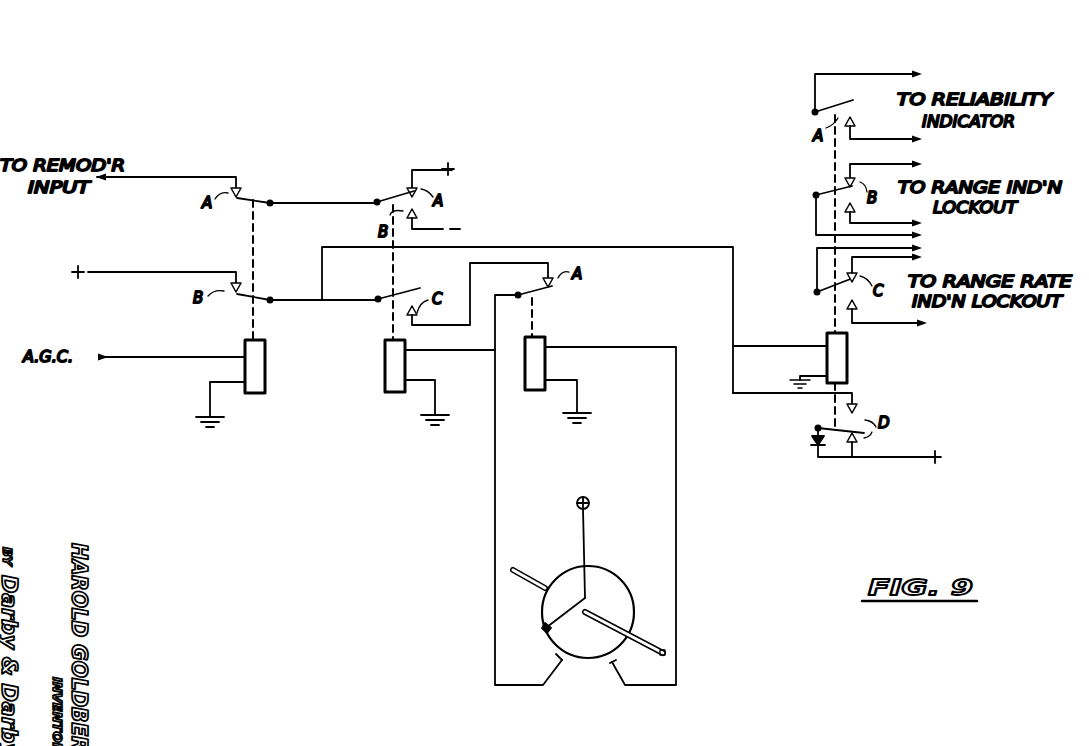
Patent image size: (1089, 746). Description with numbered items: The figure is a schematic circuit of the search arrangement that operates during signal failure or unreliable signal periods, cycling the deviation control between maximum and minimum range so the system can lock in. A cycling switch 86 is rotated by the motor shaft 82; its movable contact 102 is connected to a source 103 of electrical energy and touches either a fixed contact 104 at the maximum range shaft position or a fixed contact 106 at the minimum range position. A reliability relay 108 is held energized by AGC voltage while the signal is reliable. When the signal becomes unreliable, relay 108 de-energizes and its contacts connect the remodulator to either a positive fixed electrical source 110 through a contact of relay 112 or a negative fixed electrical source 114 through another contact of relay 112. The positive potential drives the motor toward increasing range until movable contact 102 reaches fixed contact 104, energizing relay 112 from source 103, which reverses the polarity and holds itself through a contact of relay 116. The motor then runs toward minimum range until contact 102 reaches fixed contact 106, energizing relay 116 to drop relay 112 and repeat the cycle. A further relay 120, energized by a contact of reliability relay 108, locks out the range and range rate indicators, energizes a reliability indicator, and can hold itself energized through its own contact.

The motor shaft 82 is at (663, 650).
The cycling switch 86 is at (608, 568).
The movable contact 102 is at (552, 622).
The source of electrical energy 103 is at (86, 266).
The fixed contact 104 is at (559, 660).
The fixed contact 106 is at (611, 663).
The reliability relay 108 is at (267, 378).
The positive fixed electrical source 110 is at (456, 164).
The relay 112 is at (385, 368).
The negative fixed electrical source 114 is at (462, 226).
The relay 116 is at (545, 355).
The relay 120 is at (848, 360).